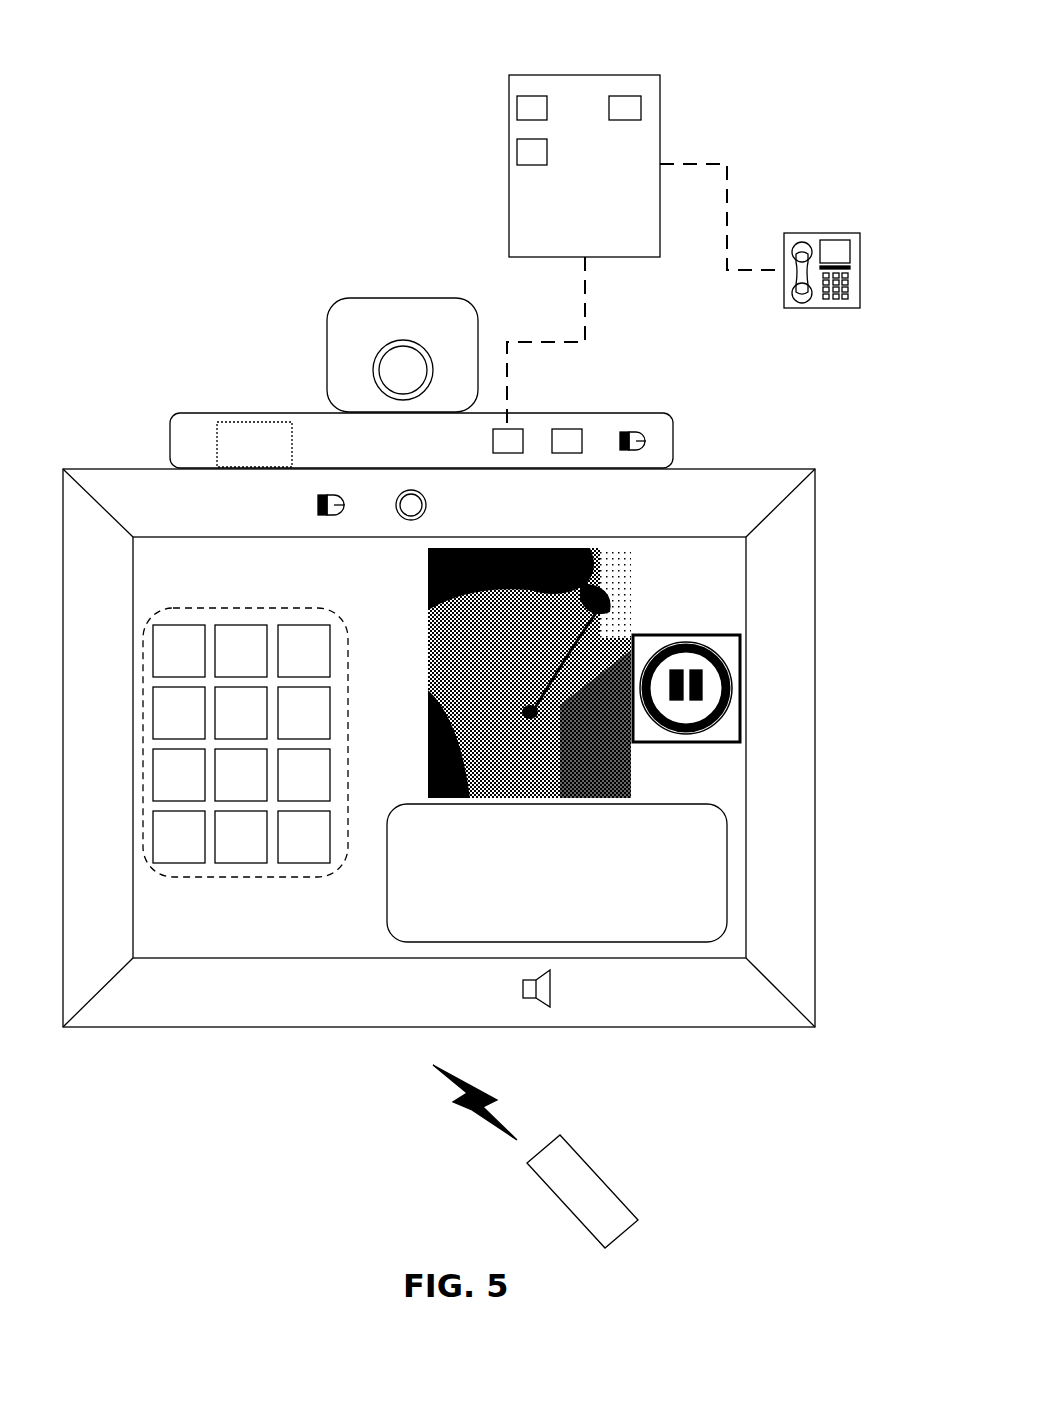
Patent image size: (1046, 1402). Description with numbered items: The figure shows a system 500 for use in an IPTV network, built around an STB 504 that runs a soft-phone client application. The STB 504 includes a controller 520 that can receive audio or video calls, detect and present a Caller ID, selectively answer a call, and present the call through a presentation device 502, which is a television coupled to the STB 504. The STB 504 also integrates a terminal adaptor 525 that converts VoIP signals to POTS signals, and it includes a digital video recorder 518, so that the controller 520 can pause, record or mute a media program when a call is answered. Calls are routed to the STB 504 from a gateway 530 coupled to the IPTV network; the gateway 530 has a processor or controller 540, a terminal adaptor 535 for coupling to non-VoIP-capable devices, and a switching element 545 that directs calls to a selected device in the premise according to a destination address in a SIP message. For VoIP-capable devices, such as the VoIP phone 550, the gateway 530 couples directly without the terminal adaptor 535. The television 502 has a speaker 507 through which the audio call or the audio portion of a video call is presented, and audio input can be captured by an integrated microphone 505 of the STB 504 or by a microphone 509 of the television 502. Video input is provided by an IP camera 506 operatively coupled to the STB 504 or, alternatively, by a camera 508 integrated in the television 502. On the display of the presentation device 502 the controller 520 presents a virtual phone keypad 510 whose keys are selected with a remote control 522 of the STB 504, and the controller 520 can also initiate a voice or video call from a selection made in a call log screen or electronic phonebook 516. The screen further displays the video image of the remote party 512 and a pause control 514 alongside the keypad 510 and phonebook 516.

The system 500 is at (462, 1243).
The presentation device 502 is at (439, 748).
The STB 504 is at (170, 415).
The integrated microphone 505 is at (630, 428).
The IP camera 506 is at (402, 355).
The speaker 507 is at (552, 983).
The camera 508 is at (425, 503).
The microphone 509 is at (318, 507).
The virtual phone keypad 510 is at (345, 637).
The video image of caller 512 is at (628, 608).
The pause button 514 is at (715, 643).
The electronic phonebook 516 is at (710, 810).
The digital video recorder 518 is at (254, 444).
The controller 520 is at (582, 440).
The remote control 522 is at (603, 1177).
The terminal adaptor 525 is at (523, 440).
The gateway 530 is at (645, 252).
The terminal adaptor 535 is at (641, 108).
The processor or controller 540 is at (548, 108).
The switching element 545 is at (516, 153).
The VoIP phone 550 is at (838, 233).